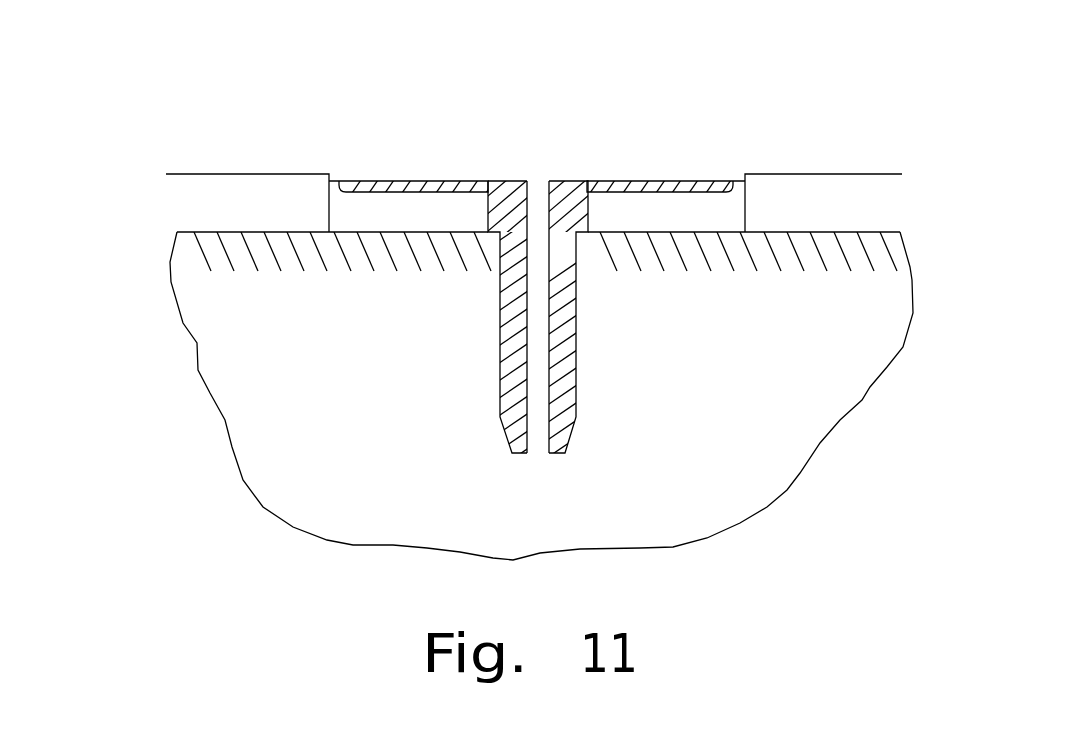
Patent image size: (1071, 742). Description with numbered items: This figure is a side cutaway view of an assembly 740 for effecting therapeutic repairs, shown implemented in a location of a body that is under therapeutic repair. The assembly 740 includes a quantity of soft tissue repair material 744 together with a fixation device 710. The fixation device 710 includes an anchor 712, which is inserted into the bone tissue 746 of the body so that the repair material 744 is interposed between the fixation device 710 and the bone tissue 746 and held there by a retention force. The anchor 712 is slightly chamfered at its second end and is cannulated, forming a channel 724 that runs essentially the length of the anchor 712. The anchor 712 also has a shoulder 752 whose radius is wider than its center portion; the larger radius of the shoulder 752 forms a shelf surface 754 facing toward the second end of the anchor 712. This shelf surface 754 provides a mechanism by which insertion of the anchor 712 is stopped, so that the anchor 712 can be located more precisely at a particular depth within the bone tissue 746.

The fixation device 710 is at (343, 97).
The assembly 740 is at (659, 78).
The soft tissue repair material 744 is at (735, 207).
The shoulder 752 is at (590, 207).
The shelf surface 754 is at (588, 233).
The anchor 712 is at (563, 304).
The channel 724 is at (551, 352).
The bone tissue 746 is at (545, 352).